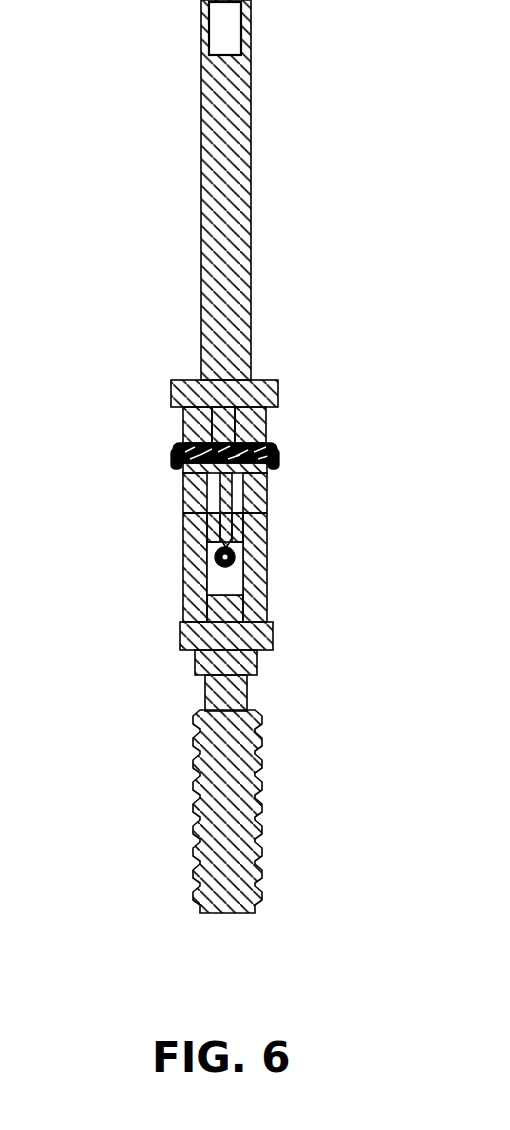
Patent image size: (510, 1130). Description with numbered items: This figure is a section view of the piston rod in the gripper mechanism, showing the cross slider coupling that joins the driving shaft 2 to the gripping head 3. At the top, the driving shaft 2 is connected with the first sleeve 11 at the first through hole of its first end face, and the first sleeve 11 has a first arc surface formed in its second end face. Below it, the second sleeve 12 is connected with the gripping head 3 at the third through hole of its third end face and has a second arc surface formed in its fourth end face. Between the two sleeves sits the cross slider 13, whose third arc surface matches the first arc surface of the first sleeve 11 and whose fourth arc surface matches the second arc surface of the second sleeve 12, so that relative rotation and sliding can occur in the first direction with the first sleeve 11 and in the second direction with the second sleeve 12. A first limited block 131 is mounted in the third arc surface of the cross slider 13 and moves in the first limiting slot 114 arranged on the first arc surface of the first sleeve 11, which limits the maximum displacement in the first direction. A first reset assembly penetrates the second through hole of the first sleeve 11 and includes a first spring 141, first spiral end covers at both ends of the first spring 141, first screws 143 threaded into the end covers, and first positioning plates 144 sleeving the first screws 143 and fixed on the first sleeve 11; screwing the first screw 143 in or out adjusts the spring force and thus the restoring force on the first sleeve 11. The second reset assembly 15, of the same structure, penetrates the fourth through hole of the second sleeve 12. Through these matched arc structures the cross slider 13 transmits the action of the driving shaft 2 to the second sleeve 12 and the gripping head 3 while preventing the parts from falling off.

The driving shaft 2 is at (222, 208).
The first sleeve 11 is at (266, 414).
The first positioning plate 144 is at (270, 442).
The first screw 143 is at (278, 460).
The first limiting slot 114 is at (178, 474).
The first spring 141 is at (268, 472).
The second sleeve 12 is at (266, 601).
The first limited block 131 is at (250, 516).
The cross slider 13 is at (215, 482).
The second reset assembly 15 is at (217, 566).
The gripping head 3 is at (195, 780).